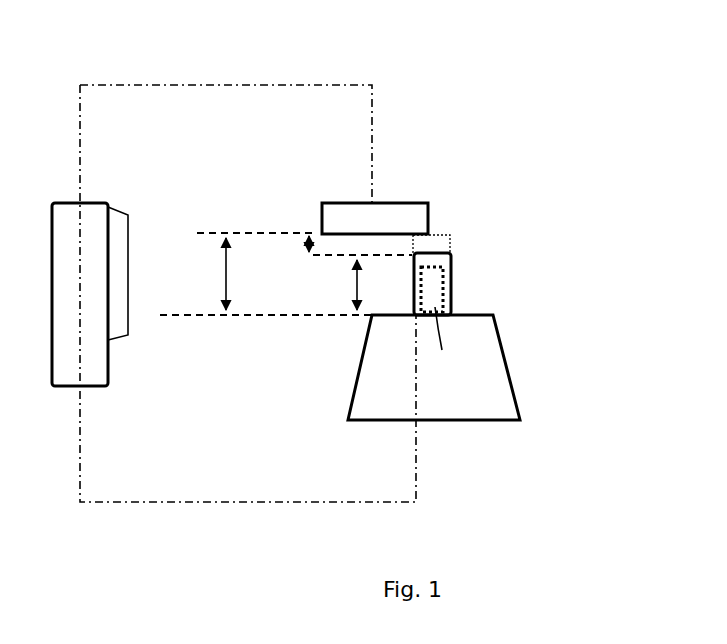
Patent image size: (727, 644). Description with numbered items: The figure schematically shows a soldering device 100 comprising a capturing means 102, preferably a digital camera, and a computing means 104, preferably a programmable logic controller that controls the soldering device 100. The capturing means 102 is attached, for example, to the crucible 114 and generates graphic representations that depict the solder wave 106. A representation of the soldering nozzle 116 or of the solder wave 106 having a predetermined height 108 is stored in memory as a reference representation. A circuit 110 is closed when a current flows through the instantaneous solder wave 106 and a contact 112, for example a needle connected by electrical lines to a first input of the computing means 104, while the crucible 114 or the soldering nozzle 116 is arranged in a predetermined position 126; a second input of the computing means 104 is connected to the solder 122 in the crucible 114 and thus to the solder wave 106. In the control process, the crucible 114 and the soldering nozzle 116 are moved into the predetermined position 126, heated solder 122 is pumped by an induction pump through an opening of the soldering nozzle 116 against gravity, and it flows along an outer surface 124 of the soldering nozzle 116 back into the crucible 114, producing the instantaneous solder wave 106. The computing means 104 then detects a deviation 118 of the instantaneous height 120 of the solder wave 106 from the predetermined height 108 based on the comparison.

The soldering device 100 is at (562, 110).
The capturing means 102 is at (118, 306).
The computing means 104 is at (100, 284).
The solder wave 106 is at (442, 263).
The predetermined height 108 is at (223, 275).
The circuit 110 is at (258, 85).
The contact 112 is at (385, 210).
The crucible 114 is at (323, 432).
The soldering nozzle 116 is at (443, 288).
The deviation 118 is at (305, 240).
The instantaneous height 120 is at (352, 265).
The solder 122 is at (452, 308).
The outer surface 124 is at (458, 341).
The predetermined position 126 is at (300, 318).